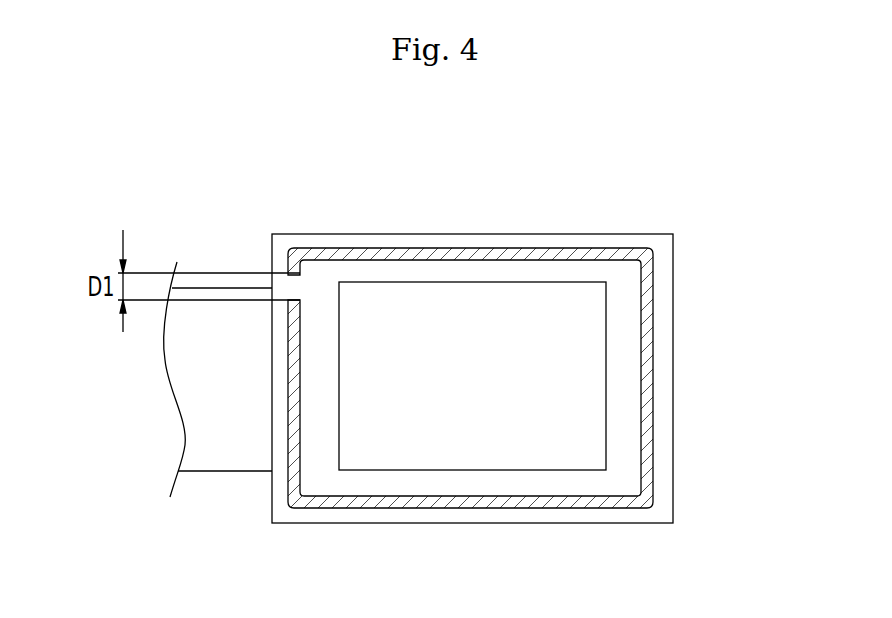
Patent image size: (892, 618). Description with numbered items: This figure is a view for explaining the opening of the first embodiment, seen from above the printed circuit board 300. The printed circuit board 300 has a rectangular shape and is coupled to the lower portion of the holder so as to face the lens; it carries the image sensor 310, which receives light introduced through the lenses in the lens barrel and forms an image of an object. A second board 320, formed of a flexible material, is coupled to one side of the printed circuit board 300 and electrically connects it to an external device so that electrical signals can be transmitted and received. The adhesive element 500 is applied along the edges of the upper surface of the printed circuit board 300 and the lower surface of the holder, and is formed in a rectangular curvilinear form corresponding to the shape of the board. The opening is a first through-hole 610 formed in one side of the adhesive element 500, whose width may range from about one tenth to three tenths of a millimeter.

The printed circuit board 300 is at (670, 220).
The image sensor 310 is at (582, 424).
The second board 320 is at (227, 457).
The adhesive element 500 is at (404, 254).
The first through-hole 610 is at (296, 290).